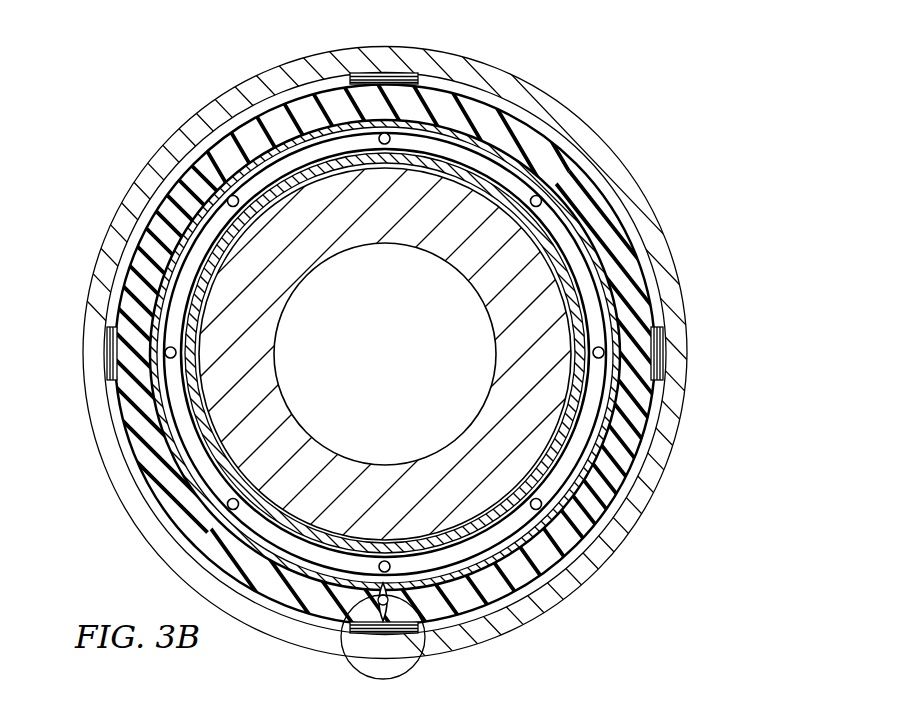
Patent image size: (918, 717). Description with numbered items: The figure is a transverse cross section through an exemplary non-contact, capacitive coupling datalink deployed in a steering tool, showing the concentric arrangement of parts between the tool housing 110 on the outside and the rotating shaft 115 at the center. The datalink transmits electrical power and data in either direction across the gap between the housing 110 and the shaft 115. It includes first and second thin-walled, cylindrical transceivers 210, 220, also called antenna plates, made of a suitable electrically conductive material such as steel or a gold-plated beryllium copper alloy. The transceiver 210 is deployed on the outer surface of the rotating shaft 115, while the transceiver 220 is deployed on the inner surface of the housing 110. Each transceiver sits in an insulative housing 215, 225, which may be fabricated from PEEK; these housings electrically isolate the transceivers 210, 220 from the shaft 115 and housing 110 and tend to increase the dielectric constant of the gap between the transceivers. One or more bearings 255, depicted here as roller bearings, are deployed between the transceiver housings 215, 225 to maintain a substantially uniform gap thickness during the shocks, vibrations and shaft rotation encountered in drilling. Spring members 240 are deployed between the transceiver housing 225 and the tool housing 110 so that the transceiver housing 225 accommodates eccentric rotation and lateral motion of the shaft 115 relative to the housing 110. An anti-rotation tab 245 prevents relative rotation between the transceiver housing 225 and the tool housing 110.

The housing 110 is at (274, 64).
The shaft 115 is at (482, 285).
The first transceiver 210 is at (296, 168).
The insulative housing 215 is at (418, 172).
The second transceiver 220 is at (435, 122).
The insulative housing 225 is at (533, 127).
The spring members 240 is at (106, 336).
The anti-rotation tab 245 is at (335, 632).
The bearings 255 is at (171, 165).